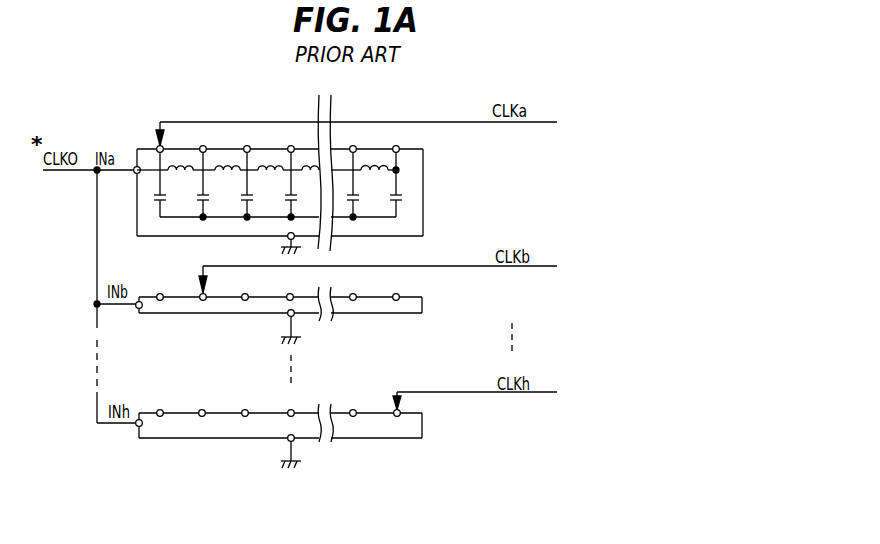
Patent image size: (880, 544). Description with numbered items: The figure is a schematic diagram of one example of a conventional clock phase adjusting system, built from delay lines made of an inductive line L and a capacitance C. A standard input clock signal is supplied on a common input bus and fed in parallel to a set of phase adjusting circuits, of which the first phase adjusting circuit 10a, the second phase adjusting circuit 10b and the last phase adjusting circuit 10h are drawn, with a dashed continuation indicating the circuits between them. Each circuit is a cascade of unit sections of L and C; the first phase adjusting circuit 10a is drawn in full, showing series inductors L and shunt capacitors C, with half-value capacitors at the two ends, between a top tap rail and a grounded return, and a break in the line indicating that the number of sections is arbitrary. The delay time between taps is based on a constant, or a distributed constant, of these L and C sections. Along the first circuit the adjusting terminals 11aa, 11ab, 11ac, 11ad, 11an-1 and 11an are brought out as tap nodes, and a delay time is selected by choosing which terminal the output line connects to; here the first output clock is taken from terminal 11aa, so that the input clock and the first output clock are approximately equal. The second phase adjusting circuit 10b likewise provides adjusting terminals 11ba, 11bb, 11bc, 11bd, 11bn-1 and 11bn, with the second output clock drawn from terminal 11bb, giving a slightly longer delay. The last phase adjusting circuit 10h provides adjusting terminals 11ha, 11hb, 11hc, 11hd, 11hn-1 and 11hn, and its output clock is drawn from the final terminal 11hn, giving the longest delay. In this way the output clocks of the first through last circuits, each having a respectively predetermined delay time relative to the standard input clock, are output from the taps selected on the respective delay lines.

The phase adjusting circuit 10a is at (418, 198).
The phase adjusting circuit 10b is at (415, 308).
The phase adjusting circuit 10h is at (410, 430).
The adjusting terminal 11aa is at (144, 140).
The adjusting terminal 11ab is at (198, 139).
The adjusting terminal 11ac is at (246, 139).
The adjusting terminal 11ad is at (290, 139).
The adjusting terminal 11an-1 is at (359, 139).
The adjusting terminal 11an is at (402, 139).
The adjusting terminal 11ba is at (150, 286).
The adjusting terminal 11bb is at (189, 286).
The adjusting terminal 11bc is at (240, 286).
The adjusting terminal 11bd is at (289, 286).
The adjusting terminal 11bn-1 is at (353, 287).
The adjusting terminal 11bn is at (396, 287).
The adjusting terminal 11ha is at (156, 403).
The adjusting terminal 11hb is at (200, 403).
The adjusting terminal 11hc is at (245, 403).
The adjusting terminal 11hd is at (291, 403).
The adjusting terminal 11hn-1 is at (351, 404).
The adjusting terminal 11hn is at (414, 405).